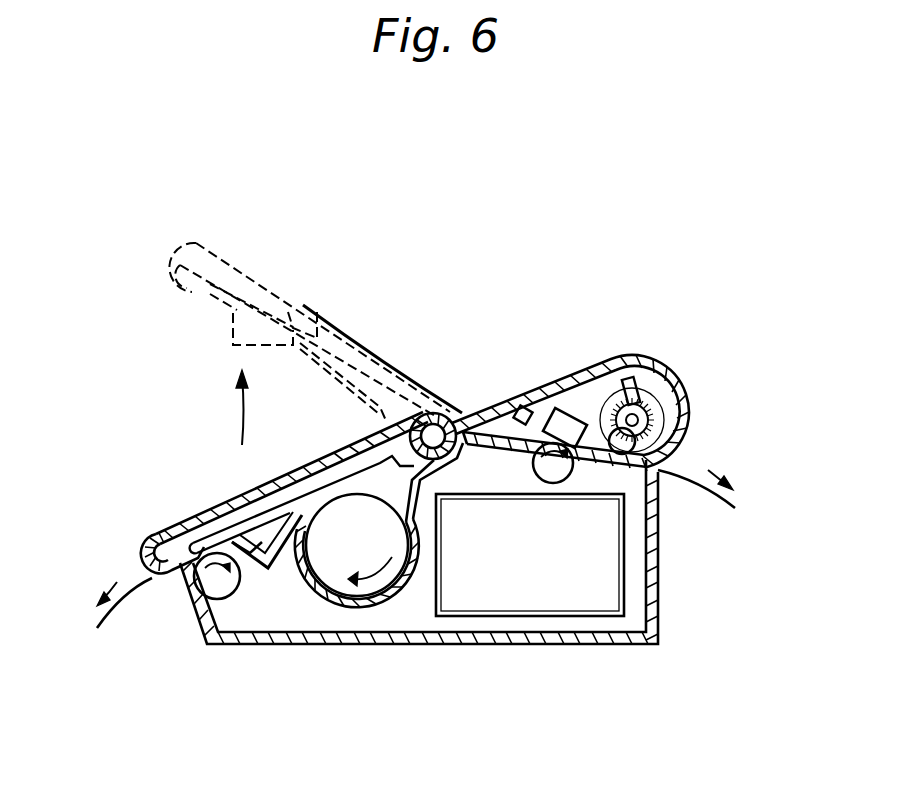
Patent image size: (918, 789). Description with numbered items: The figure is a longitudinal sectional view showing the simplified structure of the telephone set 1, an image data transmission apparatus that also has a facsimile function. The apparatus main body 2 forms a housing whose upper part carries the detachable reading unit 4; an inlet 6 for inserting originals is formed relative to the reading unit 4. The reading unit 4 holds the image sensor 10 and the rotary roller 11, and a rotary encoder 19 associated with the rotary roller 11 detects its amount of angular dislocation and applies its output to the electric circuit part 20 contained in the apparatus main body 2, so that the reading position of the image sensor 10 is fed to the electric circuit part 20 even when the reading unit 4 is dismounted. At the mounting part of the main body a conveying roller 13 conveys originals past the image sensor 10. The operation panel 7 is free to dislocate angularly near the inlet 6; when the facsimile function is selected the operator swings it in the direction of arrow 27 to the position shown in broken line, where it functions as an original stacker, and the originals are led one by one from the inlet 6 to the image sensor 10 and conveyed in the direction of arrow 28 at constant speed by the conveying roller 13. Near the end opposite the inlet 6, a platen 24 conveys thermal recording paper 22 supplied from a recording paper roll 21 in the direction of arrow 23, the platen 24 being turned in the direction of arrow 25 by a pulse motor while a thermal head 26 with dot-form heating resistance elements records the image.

The telephone set 1 is at (703, 168).
The apparatus main body 2 is at (600, 647).
The reading unit 4 is at (625, 358).
The inlet 6 is at (493, 410).
The operation panel 7 is at (244, 272).
The image sensor 10 is at (567, 423).
The rotary roller 11 is at (683, 433).
The conveying roller 13 is at (510, 432).
The rotary encoder 19 is at (650, 403).
The electric circuit part 20 is at (530, 567).
The recording paper roll 21 is at (343, 557).
The thermal recording paper 22 is at (127, 600).
The arrow 23 is at (117, 580).
The platen 24 is at (237, 563).
The arrow 25 is at (223, 597).
The thermal head 26 is at (197, 547).
The arrow 27 is at (240, 400).
The arrow 28 is at (708, 470).